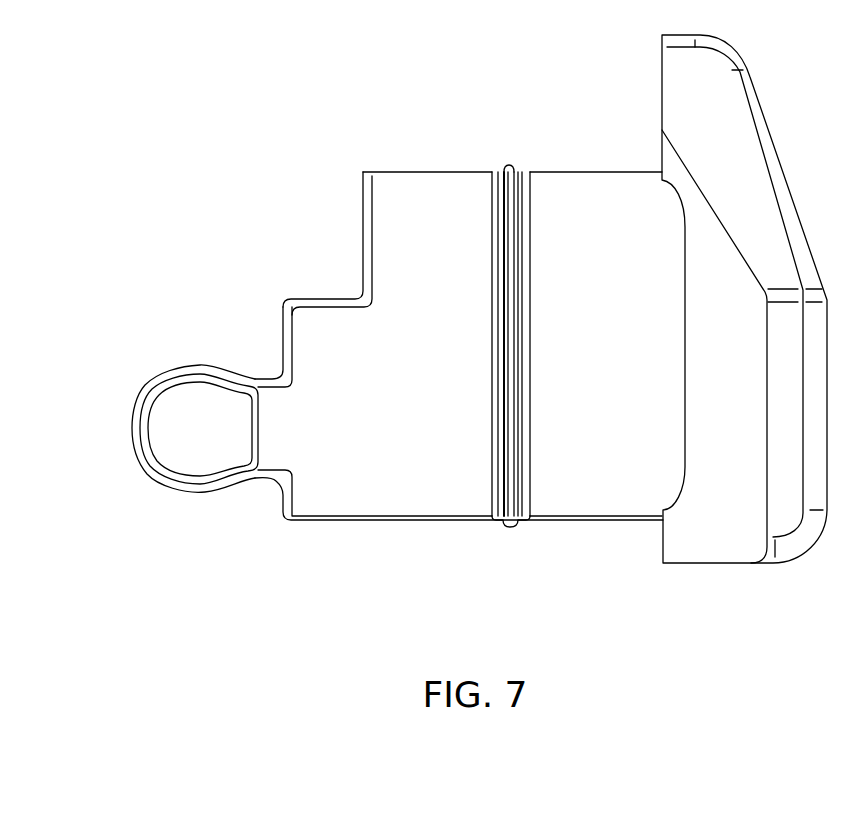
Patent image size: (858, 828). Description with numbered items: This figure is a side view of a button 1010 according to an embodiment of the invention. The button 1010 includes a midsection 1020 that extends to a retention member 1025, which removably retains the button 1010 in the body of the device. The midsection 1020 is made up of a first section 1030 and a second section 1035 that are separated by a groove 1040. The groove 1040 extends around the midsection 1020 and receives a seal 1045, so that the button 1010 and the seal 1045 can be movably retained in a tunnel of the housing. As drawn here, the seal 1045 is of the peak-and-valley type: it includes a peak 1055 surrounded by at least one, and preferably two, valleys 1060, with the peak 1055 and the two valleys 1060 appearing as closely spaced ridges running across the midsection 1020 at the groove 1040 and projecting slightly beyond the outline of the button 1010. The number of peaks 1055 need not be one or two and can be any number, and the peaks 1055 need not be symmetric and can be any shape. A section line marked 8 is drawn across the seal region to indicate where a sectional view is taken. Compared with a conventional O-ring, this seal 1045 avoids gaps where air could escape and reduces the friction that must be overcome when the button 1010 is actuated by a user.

The button 1010 is at (732, 144).
The midsection 1020 is at (390, 528).
The retention member 1025 is at (158, 478).
The first section 1030 is at (410, 190).
The second section 1035 is at (616, 190).
The groove 1040 is at (525, 168).
The seal 1045 is at (512, 528).
The peak 1055 is at (507, 167).
The valley 1060 is at (500, 170).
The section line 8- 8 is at (591, 152).